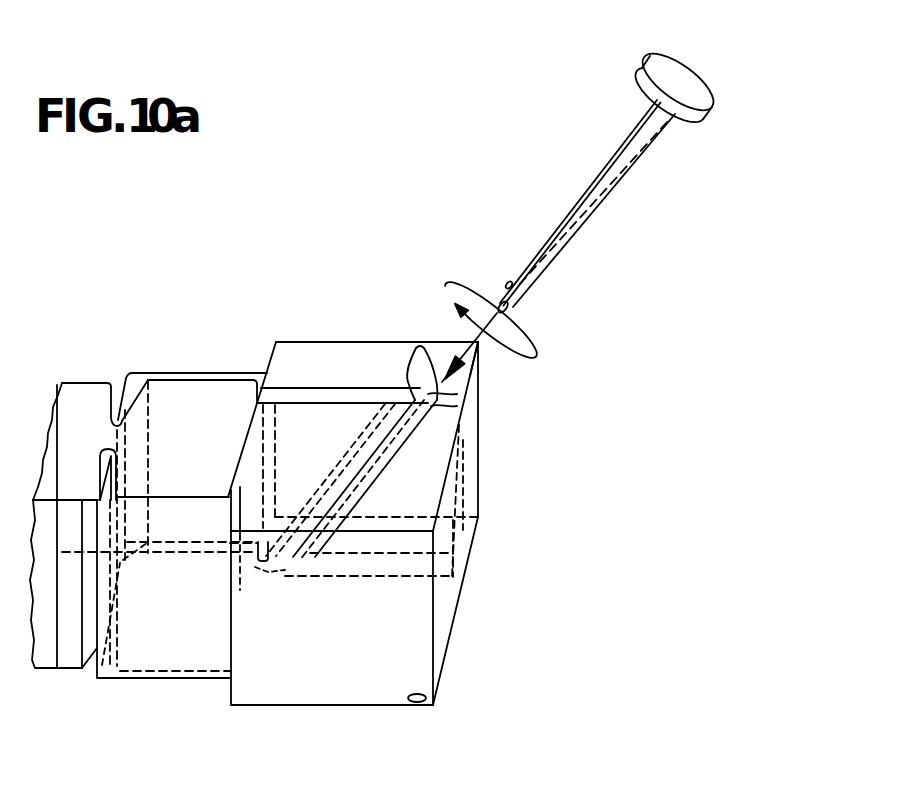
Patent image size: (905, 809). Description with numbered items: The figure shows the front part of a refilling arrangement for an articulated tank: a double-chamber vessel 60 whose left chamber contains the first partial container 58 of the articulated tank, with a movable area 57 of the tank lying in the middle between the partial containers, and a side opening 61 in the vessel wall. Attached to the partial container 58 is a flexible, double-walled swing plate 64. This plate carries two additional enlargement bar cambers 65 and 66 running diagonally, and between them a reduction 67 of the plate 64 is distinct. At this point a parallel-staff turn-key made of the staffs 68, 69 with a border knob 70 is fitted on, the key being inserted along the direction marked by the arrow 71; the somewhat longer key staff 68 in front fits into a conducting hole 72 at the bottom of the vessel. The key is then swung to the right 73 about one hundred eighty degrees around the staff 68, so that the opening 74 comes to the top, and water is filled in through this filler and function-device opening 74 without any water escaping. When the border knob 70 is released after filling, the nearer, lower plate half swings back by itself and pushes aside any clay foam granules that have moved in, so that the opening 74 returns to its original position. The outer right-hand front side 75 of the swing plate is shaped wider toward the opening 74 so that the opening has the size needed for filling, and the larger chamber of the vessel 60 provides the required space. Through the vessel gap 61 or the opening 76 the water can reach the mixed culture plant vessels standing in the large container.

The movable area 57 is at (120, 428).
The partial container 58 is at (176, 392).
The double-chamber vessel 60 is at (385, 655).
The side opening 61 is at (121, 470).
The swing plate 64 is at (327, 455).
The enlargement bar camber 65 is at (416, 348).
The enlargement bar camber 66 is at (474, 378).
The reduction 67 is at (457, 403).
The key staff 68 is at (592, 208).
The key staff 69 is at (592, 188).
The border knob 70 is at (673, 77).
The insertion arrow 71 is at (457, 356).
The conducting hole 72 is at (283, 582).
The swing to the right 73 is at (537, 327).
The opening 74 is at (462, 536).
The front side 75 is at (460, 490).
The opening 76 is at (421, 704).